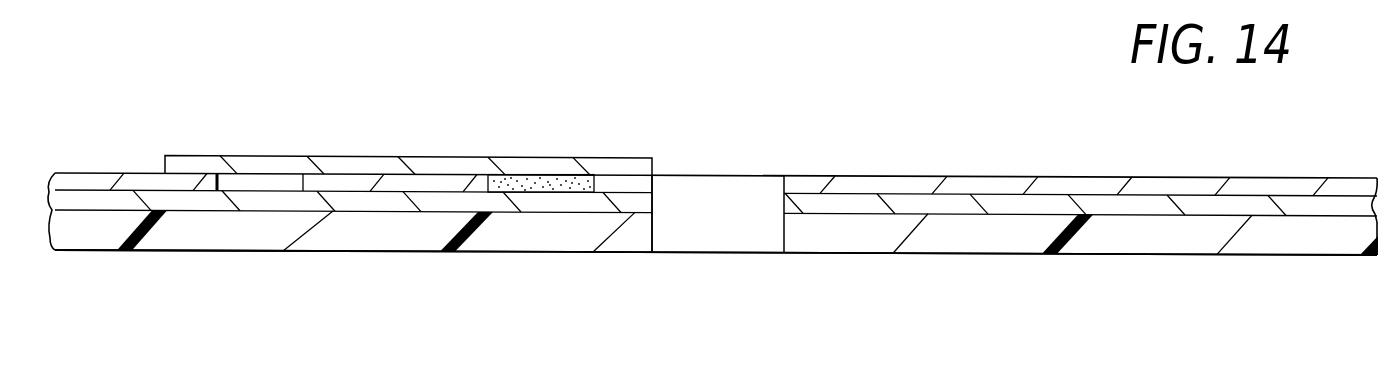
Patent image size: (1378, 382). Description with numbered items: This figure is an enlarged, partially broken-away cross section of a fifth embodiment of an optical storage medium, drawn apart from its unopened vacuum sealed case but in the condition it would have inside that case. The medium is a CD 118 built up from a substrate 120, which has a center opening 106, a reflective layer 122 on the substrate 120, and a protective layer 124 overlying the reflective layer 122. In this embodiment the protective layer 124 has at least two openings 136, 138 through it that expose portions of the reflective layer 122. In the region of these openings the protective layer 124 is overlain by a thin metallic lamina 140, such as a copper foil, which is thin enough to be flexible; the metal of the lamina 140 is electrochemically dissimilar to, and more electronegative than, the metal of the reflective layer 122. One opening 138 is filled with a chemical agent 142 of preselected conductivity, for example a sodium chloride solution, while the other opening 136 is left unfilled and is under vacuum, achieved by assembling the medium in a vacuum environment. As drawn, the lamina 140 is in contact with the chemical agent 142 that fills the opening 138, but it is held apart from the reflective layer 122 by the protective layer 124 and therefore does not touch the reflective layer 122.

The center opening 106 is at (740, 240).
The CD 118 is at (634, 277).
The substrate 120 is at (435, 233).
The reflective layer 122 is at (277, 202).
The protective layer 124 is at (92, 178).
The opening 136 is at (275, 180).
The opening 138 is at (540, 180).
The metallic lamina 140 is at (643, 167).
The chemical agent 142 is at (588, 175).